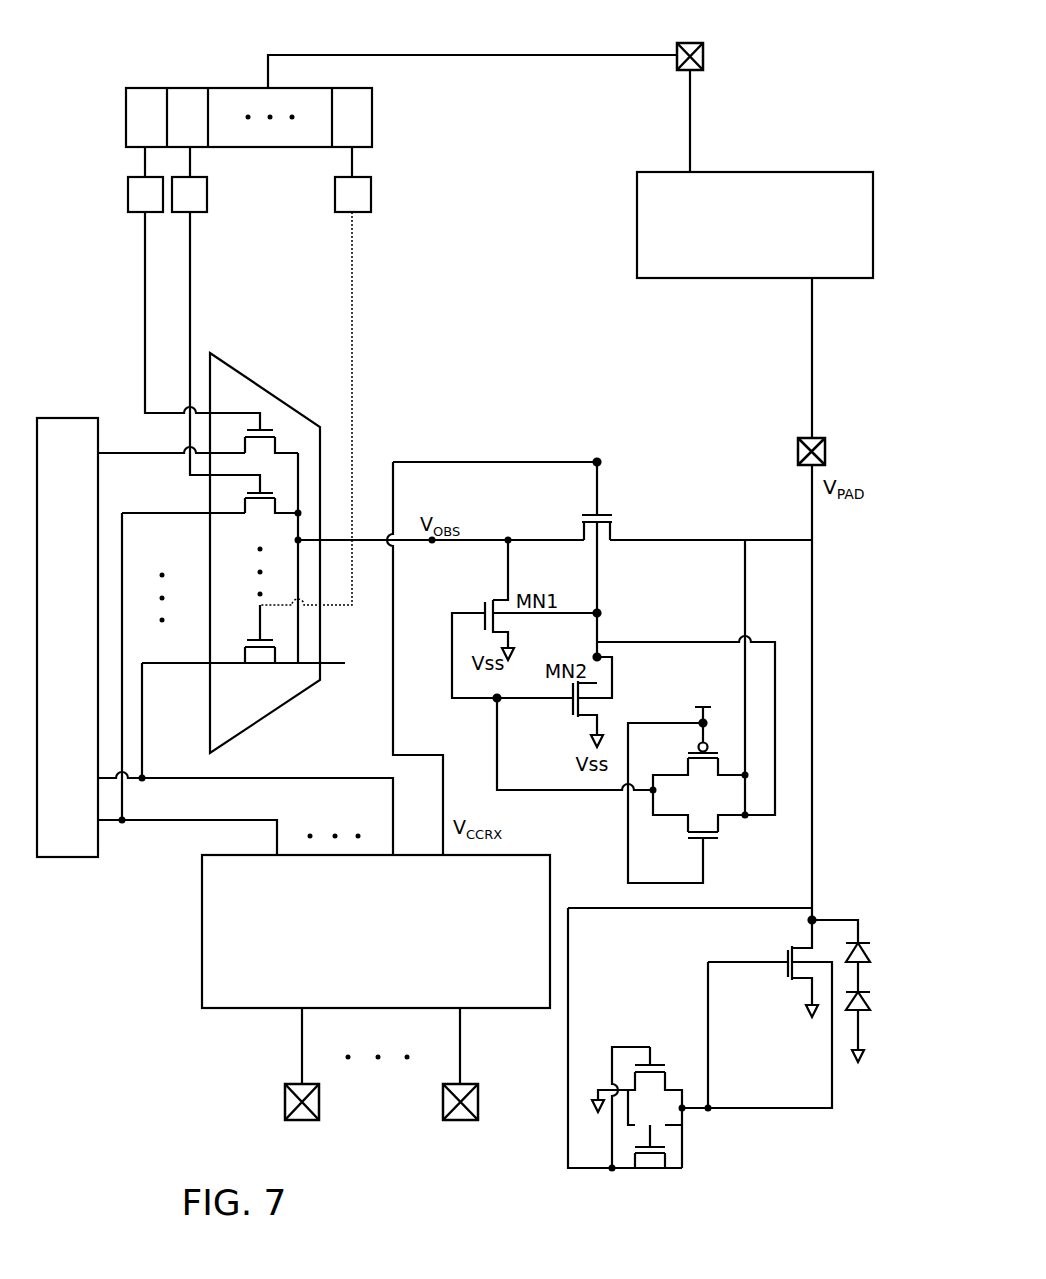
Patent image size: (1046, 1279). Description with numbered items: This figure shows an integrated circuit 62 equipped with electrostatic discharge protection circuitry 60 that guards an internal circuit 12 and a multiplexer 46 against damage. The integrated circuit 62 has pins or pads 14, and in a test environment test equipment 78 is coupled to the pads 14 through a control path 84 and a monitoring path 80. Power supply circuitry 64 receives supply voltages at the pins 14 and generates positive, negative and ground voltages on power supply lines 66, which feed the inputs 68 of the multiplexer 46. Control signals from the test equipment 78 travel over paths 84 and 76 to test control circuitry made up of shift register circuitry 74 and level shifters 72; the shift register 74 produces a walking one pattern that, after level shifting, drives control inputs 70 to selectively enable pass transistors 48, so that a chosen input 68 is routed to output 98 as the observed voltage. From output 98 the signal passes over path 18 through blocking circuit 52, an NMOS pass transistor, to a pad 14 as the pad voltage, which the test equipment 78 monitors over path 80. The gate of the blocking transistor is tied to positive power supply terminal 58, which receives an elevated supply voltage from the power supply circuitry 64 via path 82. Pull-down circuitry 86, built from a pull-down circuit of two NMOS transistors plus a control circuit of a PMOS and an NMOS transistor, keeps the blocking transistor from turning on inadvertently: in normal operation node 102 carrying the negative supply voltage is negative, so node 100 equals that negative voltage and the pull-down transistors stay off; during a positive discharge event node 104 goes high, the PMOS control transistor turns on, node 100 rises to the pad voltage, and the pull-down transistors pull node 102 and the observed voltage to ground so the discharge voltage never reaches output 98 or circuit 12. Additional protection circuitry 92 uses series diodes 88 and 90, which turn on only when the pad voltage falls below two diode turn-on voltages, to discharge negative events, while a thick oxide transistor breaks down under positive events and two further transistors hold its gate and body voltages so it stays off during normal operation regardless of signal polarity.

The circuit 12 is at (57, 418).
The pins (pads) 14 is at (703, 58).
The path 18 is at (685, 540).
The multiplexer 46 is at (282, 706).
The pass transistors 48 is at (256, 523).
The blocking circuit 52 is at (644, 502).
The positive power supply terminal 58 is at (600, 464).
The electrostatic discharge protection circuitry 60 is at (473, 433).
The integrated circuit 62 is at (84, 938).
The power supply circuitry 64 is at (202, 970).
The power supply lines 66 is at (443, 836).
The inputs 68 is at (193, 663).
The control inputs 70 is at (352, 276).
The level shifters 72 is at (335, 196).
The shift register circuitry 74 is at (372, 120).
The path 76 is at (448, 55).
The test equipment 78 is at (797, 172).
The monitoring path 80 is at (812, 352).
The path 82 is at (393, 714).
The control path 84 is at (690, 120).
The pull-down circuitry 86 is at (598, 808).
The diode 88 is at (877, 946).
The diode 90 is at (877, 996).
The electrostatic discharge protection circuitry 92 is at (572, 1172).
The output 98 is at (327, 540).
The node 100 is at (498, 700).
The node 102 is at (600, 612).
The node 104 is at (742, 780).